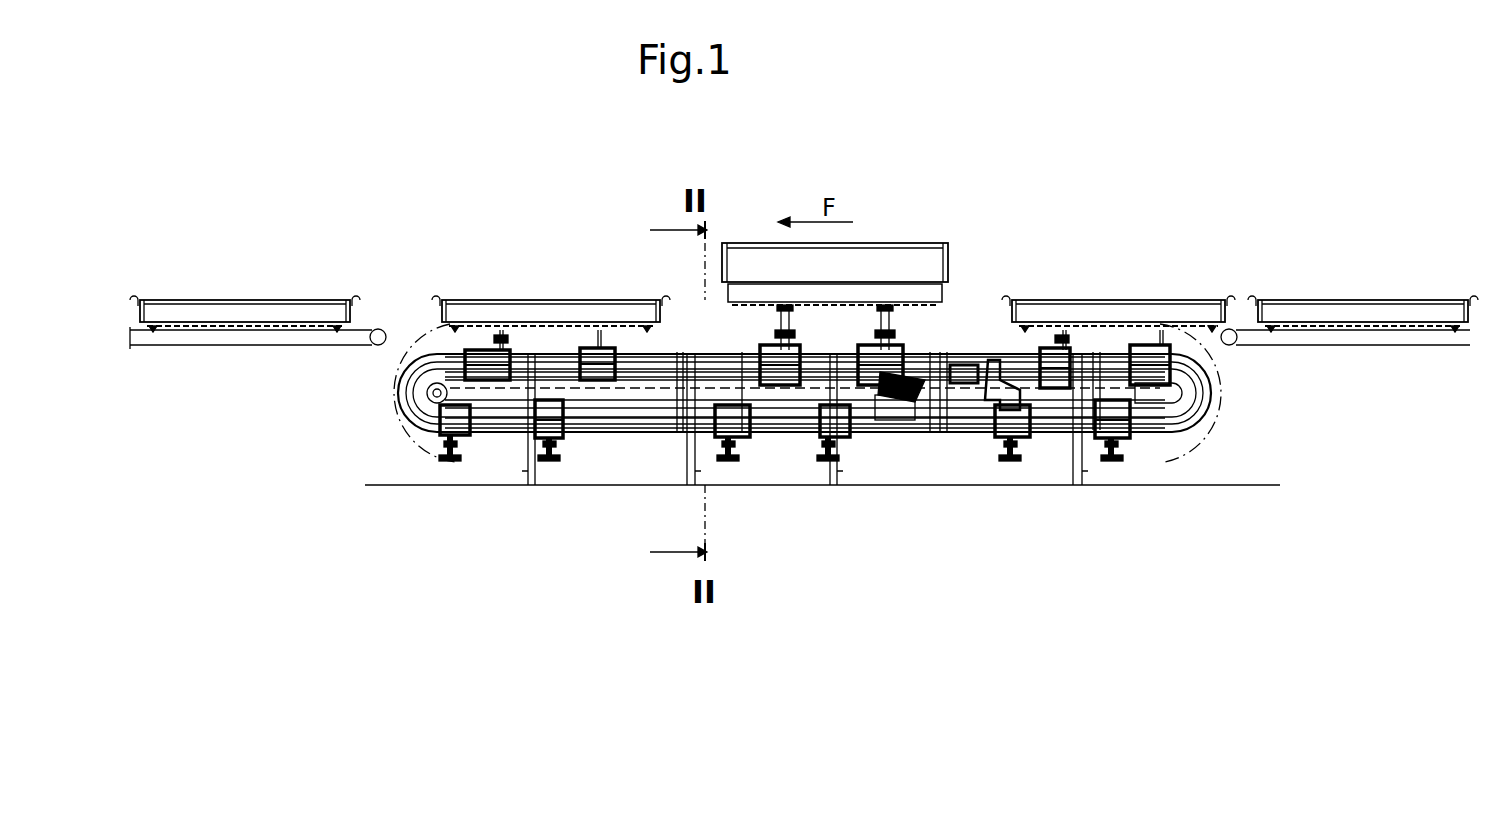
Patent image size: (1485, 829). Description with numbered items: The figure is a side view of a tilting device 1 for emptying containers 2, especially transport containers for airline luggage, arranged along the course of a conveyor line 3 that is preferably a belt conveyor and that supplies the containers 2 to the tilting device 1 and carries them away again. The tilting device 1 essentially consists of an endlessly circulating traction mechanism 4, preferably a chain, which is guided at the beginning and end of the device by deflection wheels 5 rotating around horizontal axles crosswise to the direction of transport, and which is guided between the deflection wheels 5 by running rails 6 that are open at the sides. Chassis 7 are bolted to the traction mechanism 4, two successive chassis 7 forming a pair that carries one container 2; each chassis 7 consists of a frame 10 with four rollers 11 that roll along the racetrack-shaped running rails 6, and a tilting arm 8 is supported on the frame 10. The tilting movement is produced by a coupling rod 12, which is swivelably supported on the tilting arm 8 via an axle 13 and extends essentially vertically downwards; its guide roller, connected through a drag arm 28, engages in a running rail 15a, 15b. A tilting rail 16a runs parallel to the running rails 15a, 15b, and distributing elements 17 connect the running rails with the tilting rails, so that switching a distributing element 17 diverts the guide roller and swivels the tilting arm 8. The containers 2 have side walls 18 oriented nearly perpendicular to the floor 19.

The tilting device 1 is at (512, 168).
The container 2 is at (1055, 305).
The conveyor line 3 is at (195, 337).
The traction mechanism 4 is at (1118, 357).
The deflection wheel 5 is at (403, 400).
The running rail 6 is at (963, 357).
The chassis 7 is at (587, 357).
The tilting arm 8 is at (500, 350).
The frame 10 is at (557, 433).
The roller 11 is at (527, 437).
The coupling rod 12 is at (1078, 405).
The axle 13 is at (1062, 385).
The running rail 15a is at (712, 380).
The running rail 15b is at (597, 430).
The tilting rail 16a is at (742, 363).
The distributing element 17 is at (917, 387).
The side wall 18 is at (144, 300).
The floor 19 is at (232, 323).
The drag arm 28 is at (1102, 415).